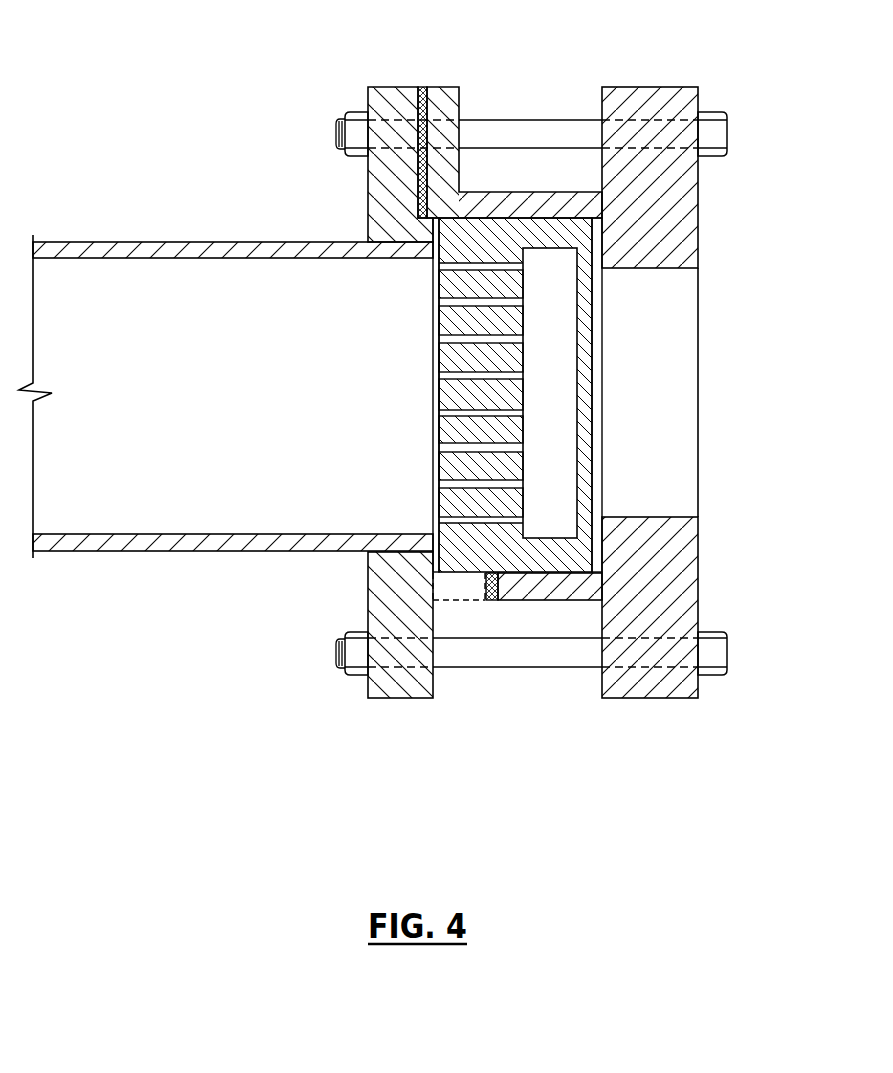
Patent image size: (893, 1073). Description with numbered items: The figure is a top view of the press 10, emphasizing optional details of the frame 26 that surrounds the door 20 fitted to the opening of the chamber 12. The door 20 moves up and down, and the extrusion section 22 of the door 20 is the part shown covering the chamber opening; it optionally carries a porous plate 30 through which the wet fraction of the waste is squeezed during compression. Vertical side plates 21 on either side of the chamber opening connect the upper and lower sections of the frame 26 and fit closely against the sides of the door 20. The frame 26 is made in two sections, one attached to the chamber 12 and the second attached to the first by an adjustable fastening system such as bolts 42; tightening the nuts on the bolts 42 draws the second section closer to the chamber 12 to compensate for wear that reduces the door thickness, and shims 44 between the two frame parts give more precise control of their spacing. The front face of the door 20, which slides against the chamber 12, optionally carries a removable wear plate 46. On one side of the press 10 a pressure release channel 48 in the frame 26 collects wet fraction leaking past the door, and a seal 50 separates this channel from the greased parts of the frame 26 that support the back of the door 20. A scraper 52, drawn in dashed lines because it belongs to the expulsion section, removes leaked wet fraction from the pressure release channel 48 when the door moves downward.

The press 10 is at (190, 672).
The chamber 12 is at (158, 242).
The door 20 is at (590, 326).
The extrusion section 22 is at (470, 395).
The vertical side plates 21 is at (498, 192).
The frame 26 is at (392, 87).
The porous plate 30 is at (433, 355).
The bolts 42 is at (522, 120).
The shims 44 is at (423, 87).
The wear plate 46 is at (433, 464).
The pressure release channel 48 is at (465, 593).
The seal 50 is at (490, 600).
The scraper 52 is at (448, 600).